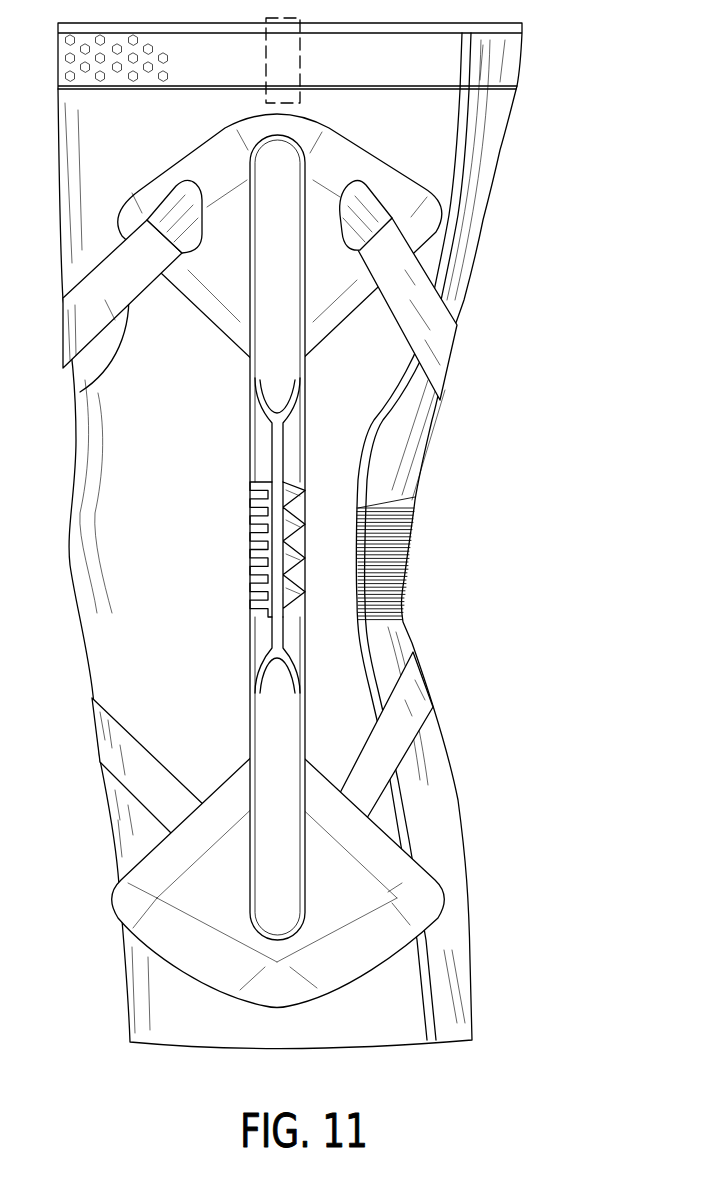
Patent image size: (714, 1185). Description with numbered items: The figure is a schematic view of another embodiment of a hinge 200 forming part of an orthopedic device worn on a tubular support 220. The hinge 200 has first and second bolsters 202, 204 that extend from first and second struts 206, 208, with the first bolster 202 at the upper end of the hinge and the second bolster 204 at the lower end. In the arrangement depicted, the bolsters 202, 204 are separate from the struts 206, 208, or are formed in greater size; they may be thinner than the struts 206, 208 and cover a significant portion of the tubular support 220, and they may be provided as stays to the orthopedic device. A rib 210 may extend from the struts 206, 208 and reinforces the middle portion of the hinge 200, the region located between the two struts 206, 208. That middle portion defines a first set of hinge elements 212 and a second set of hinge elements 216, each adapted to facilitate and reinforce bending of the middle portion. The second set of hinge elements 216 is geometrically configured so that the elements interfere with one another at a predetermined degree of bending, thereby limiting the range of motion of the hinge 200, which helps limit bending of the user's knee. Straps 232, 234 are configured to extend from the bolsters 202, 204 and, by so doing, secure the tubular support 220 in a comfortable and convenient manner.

The hinge 200 is at (268, 638).
The first bolster 202 is at (424, 218).
The second bolster 204 is at (359, 947).
The first strut 206 is at (263, 462).
The second strut 208 is at (282, 715).
The rib 210 is at (280, 473).
The first set of hinge elements 212 is at (250, 525).
The second set of hinge elements 216 is at (385, 525).
The tubular support 220 is at (206, 421).
The strap 232 is at (130, 288).
The strap 234 is at (428, 313).